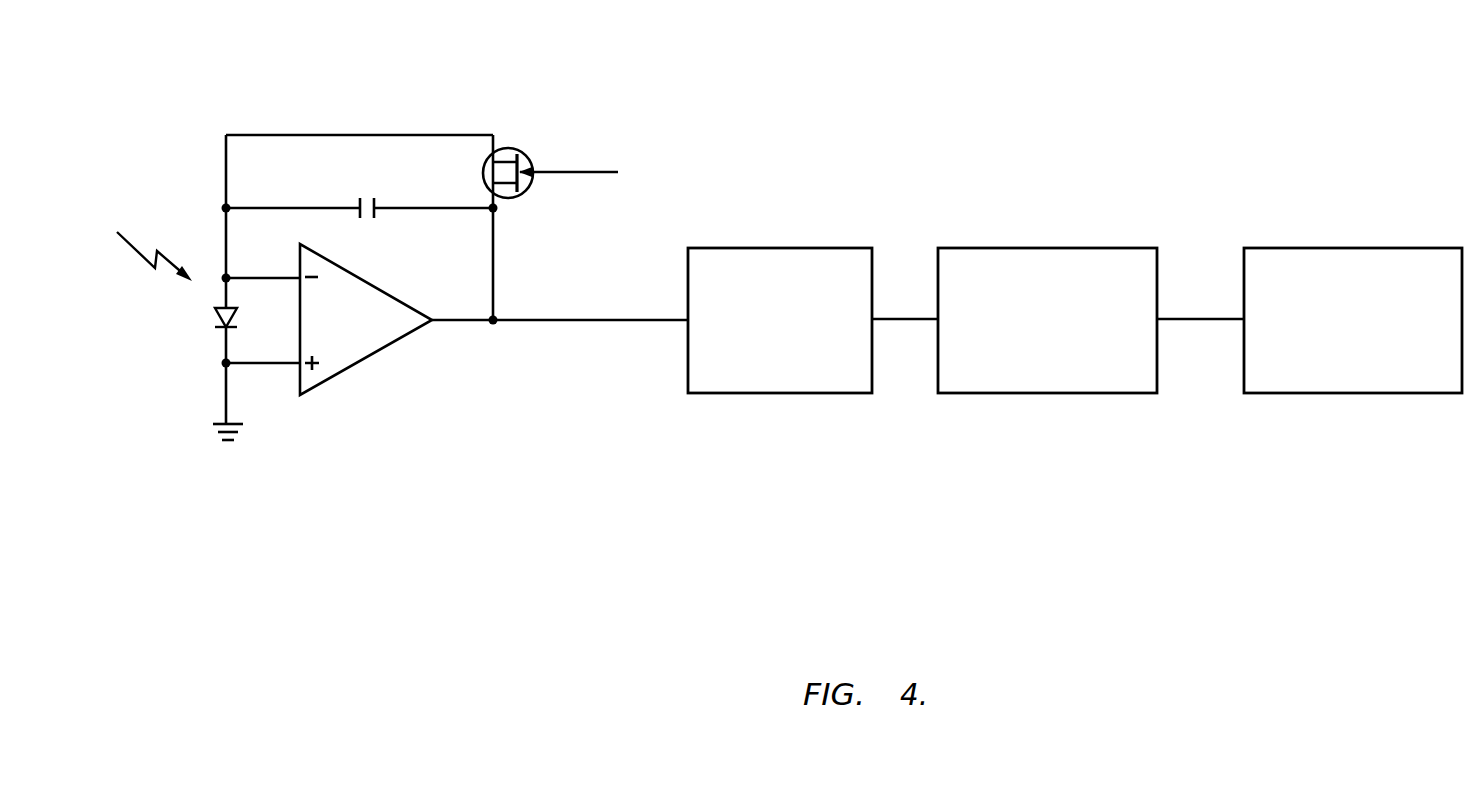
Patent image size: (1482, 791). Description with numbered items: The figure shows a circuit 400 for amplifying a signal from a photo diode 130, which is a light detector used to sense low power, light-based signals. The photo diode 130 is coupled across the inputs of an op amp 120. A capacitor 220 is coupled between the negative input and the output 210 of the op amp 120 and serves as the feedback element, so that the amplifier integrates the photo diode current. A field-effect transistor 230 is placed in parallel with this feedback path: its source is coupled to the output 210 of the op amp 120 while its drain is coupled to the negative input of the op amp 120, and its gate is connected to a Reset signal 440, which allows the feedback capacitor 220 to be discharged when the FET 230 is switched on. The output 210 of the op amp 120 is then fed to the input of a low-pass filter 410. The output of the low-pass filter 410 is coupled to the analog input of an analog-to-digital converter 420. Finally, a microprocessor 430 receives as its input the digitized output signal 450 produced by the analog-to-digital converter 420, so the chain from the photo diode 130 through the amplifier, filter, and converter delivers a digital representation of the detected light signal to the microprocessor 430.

The circuit 400 is at (849, 94).
The photo diode 130 is at (217, 316).
The op amp 120 is at (373, 283).
The capacitor 220 is at (367, 191).
The field-effect transistor 230 is at (527, 151).
The Reset signal 440 is at (603, 173).
The output 210 is at (592, 318).
The low-pass filter 410 is at (840, 248).
The analog-to-digital converter 420 is at (1105, 248).
The digitized output signal 450 is at (1190, 319).
The microprocessor 430 is at (1427, 248).